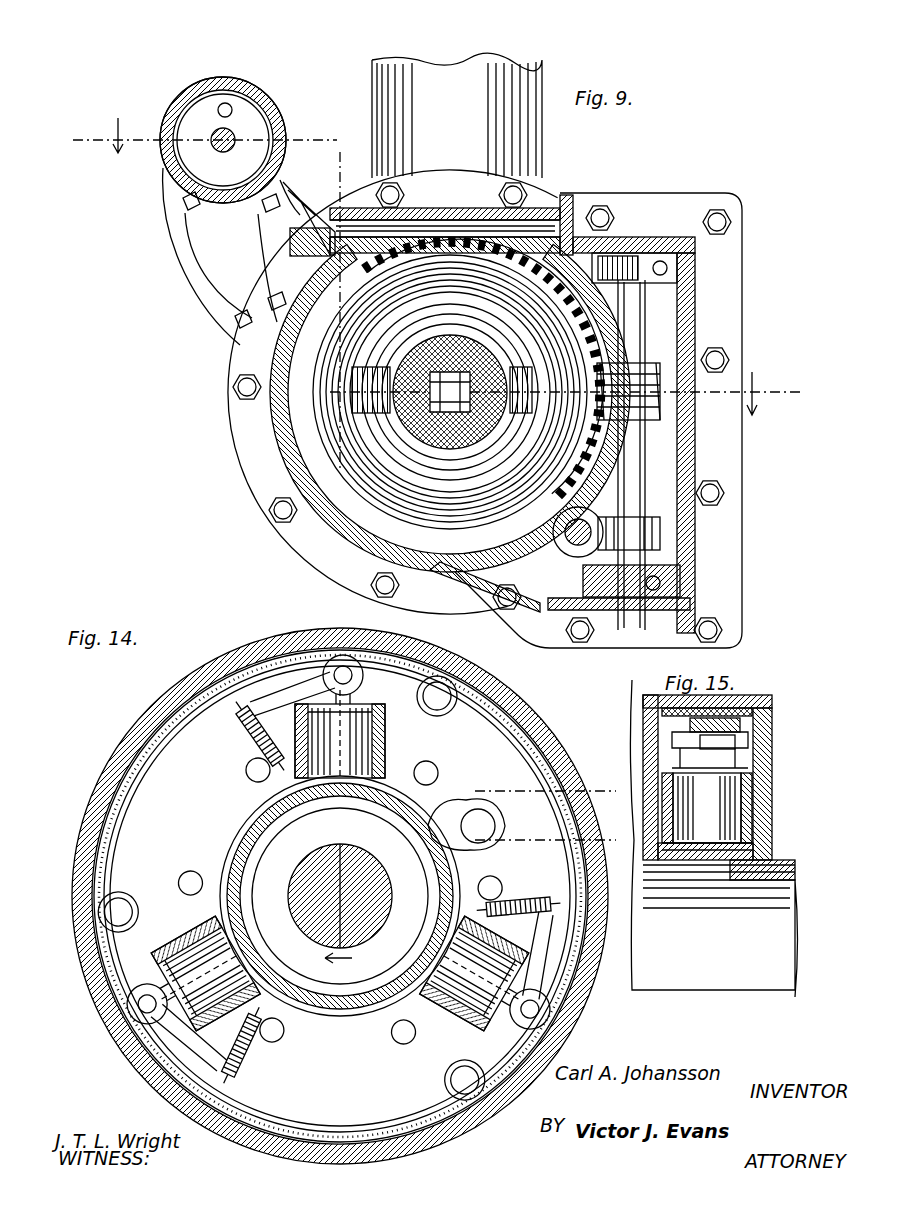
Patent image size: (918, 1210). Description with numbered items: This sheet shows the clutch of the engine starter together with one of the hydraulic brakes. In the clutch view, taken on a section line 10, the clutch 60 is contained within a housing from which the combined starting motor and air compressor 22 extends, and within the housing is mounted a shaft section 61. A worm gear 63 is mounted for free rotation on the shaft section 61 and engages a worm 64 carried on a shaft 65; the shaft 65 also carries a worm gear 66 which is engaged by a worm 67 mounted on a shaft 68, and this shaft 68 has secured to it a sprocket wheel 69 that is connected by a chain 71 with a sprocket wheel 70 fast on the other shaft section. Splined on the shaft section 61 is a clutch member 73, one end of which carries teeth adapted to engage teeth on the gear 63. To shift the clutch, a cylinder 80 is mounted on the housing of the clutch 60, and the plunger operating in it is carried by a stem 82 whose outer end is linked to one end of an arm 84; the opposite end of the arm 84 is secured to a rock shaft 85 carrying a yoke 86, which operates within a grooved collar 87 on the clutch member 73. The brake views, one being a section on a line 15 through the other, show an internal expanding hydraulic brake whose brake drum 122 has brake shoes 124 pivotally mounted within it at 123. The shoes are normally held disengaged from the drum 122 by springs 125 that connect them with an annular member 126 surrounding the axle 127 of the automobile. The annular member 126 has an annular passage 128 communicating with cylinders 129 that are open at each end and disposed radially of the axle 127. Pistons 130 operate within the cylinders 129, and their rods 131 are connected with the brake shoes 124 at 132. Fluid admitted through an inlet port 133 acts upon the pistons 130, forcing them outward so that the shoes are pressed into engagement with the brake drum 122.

In FIG. 9, the section line 10 is at (437, 266).
In FIG. 9, the combined starting motor and air compressor 22 is at (487, 75).
In FIG. 9, the clutch 60 is at (345, 442).
In FIG. 9, the shaft section 61 is at (455, 375).
In FIG. 9, the worm gear 63 is at (488, 568).
In FIG. 9, the worm 64 is at (640, 390).
In FIG. 9, the shaft 65 is at (640, 300).
In FIG. 9, the worm gear 66 is at (640, 535).
In FIG. 9, the worm 67 is at (545, 625).
In FIG. 9, the shaft 68 is at (565, 520).
In FIG. 9, the sprocket wheel 69 is at (520, 600).
In FIG. 9, the sprocket wheel 70 is at (470, 440).
In FIG. 9, the chain 71 is at (440, 505).
In FIG. 9, the clutch member 73 is at (395, 345).
In FIG. 9, the cylinder 80 is at (265, 95).
In FIG. 9, the stem 82 is at (235, 132).
In FIG. 9, the arm 84 is at (318, 200).
In FIG. 9, the rock shaft 85 is at (565, 230).
In FIG. 9, the yoke 86 is at (388, 335).
In FIG. 9, the grooved collar 87 is at (500, 345).
In FIG. 14, the section line 15 is at (345, 625).
In FIG. 14, the brake drum 122 is at (120, 770).
In FIG. 15, the brake drum 122 is at (648, 700).
In FIG. 14, the pivot mounting 123 is at (125, 900).
In FIG. 14, the brake shoes 124 is at (150, 825).
In FIG. 15, the brake shoes 124 is at (745, 730).
In FIG. 14, the springs 125 is at (245, 750).
In FIG. 14, the annular member 126 is at (355, 1015).
In FIG. 15, the annular member 126 is at (705, 850).
In FIG. 14, the axle 127 is at (300, 872).
In FIG. 14, the annular passage 128 is at (325, 1005).
In FIG. 15, the annular passage 128 is at (685, 845).
In FIG. 14, the cylinders 129 is at (250, 720).
In FIG. 15, the cylinders 129 is at (752, 795).
In FIG. 14, the pistons 130 is at (340, 790).
In FIG. 15, the pistons 130 is at (720, 815).
In FIG. 14, the rods 131 is at (325, 695).
In FIG. 15, the rods 131 is at (700, 740).
In FIG. 14, the connection 132 is at (158, 1028).
In FIG. 15, the connection 132 is at (740, 755).
In FIG. 14, the inlet port 133 is at (505, 835).